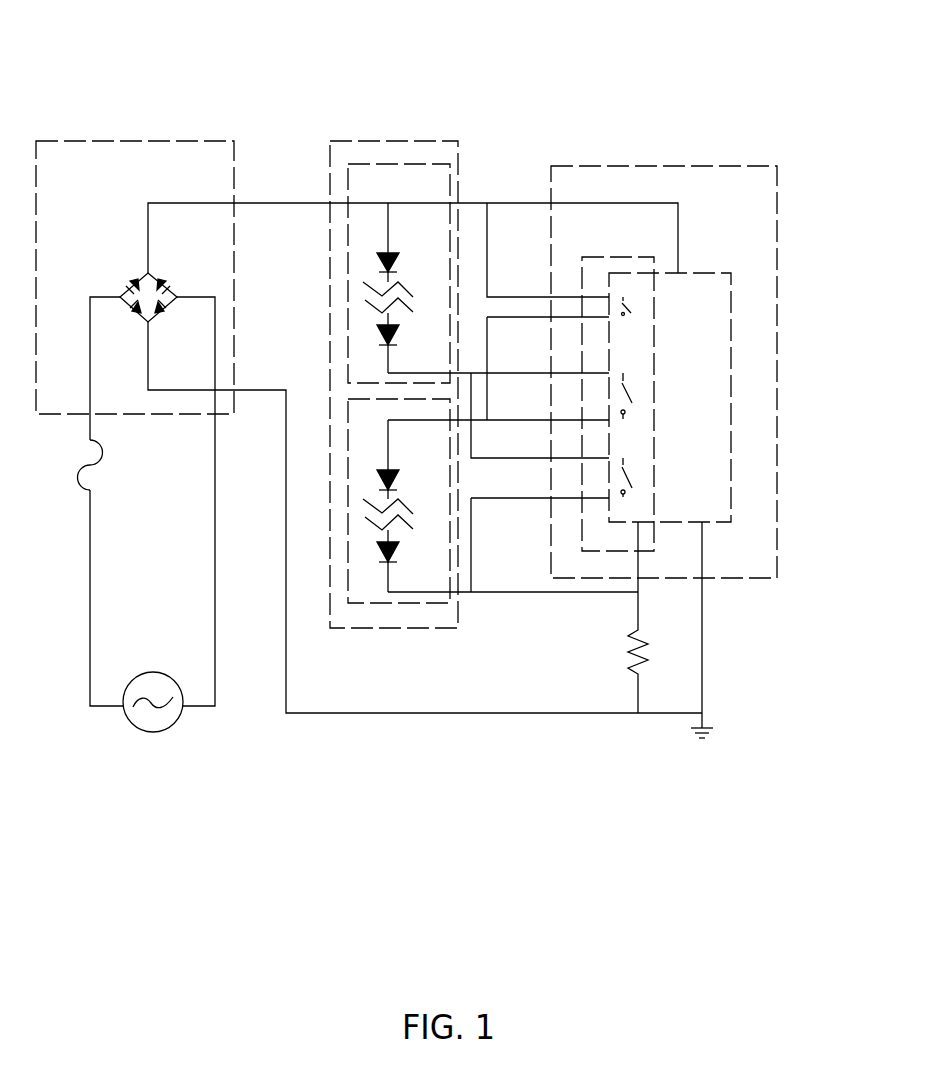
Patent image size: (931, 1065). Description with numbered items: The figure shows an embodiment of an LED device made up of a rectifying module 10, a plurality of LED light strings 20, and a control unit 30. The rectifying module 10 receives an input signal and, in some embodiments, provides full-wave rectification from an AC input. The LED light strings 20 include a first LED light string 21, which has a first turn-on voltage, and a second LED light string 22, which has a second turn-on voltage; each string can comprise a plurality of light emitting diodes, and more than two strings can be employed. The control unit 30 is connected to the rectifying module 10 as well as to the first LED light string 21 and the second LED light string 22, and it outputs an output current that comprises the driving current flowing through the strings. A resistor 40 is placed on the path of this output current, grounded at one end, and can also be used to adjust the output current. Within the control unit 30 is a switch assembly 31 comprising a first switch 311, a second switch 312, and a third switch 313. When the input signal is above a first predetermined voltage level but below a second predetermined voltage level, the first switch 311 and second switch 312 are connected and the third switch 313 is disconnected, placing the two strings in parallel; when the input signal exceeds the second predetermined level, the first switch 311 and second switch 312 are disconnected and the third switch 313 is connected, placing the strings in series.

The rectifying module 10 is at (112, 142).
The LED light strings 20 is at (395, 142).
The first LED light string 21 is at (427, 162).
The second LED light string 22 is at (430, 604).
The control unit 30 is at (738, 162).
The switch assembly 31 is at (642, 257).
The first switch 311 is at (631, 313).
The second switch 312 is at (632, 488).
The third switch 313 is at (632, 403).
The resistor 40 is at (615, 650).